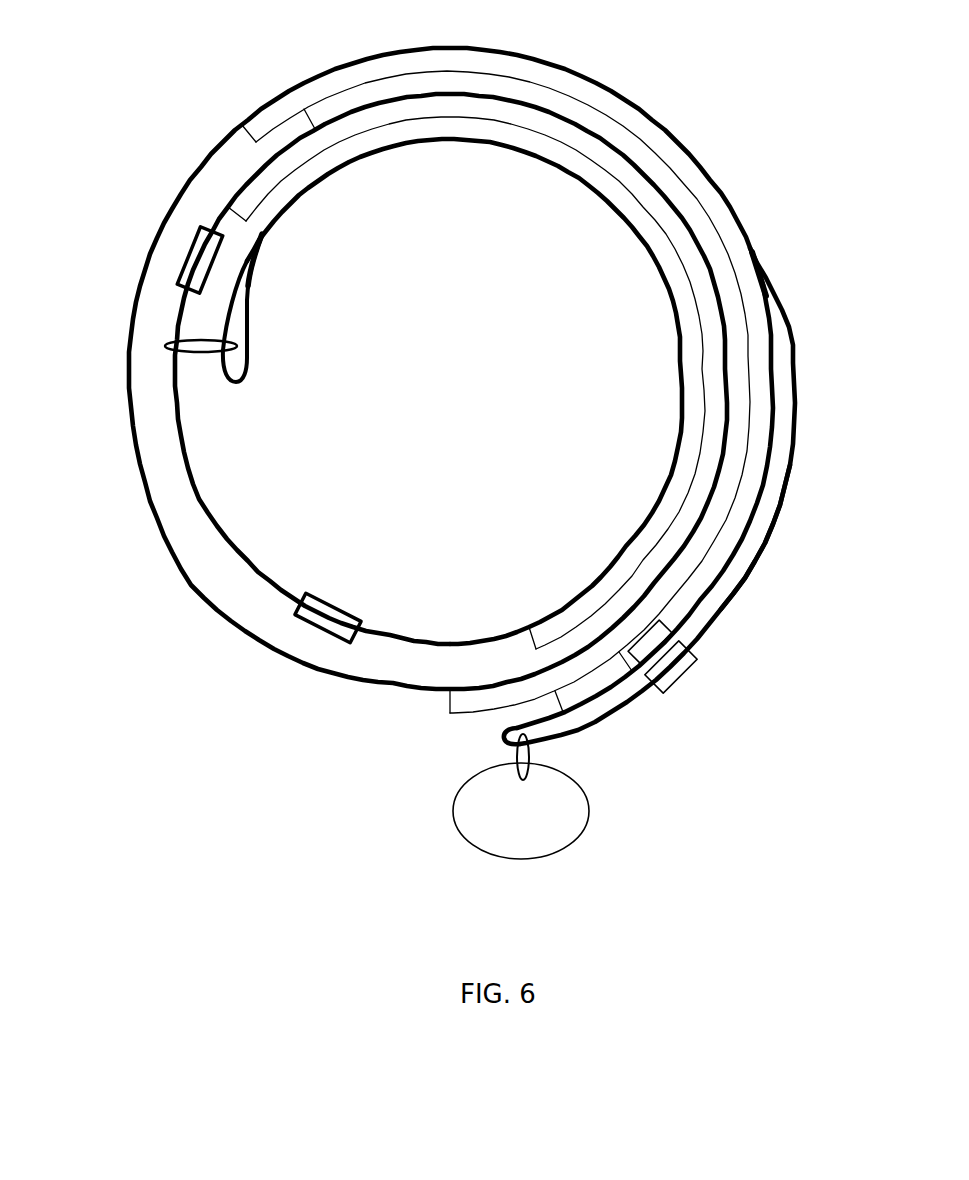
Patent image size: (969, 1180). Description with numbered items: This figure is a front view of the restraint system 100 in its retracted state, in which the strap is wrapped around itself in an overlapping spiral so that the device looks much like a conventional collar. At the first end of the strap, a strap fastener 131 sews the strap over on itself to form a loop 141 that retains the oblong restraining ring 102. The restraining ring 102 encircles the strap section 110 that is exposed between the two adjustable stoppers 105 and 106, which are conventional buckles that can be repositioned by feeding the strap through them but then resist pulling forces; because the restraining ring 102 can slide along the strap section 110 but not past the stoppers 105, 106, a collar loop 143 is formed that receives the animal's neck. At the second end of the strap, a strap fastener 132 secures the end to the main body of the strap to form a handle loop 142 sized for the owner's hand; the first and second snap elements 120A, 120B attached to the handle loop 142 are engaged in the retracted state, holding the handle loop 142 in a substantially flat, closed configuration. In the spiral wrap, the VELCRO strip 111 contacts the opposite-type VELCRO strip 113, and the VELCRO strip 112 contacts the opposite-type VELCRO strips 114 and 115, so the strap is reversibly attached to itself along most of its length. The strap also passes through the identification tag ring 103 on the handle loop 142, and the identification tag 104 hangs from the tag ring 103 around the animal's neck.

The restraint system 100 is at (114, 106).
The restraining ring 102 is at (198, 347).
The identification tag ring 103 is at (505, 757).
The identification tag 104 is at (553, 840).
The adjustable stopper 105 is at (330, 612).
The adjustable stopper 106 is at (204, 262).
The strap section 110 is at (258, 565).
The VELCRO strip 111 is at (277, 195).
The VELCRO strip 112 is at (690, 208).
The VELCRO strip 113 is at (310, 145).
The VELCRO strip 114 is at (757, 422).
The VELCRO strip 115 is at (585, 683).
The first snap element 120A is at (663, 688).
The second snap element 120B is at (657, 638).
The strap fastener 131 is at (262, 260).
The strap fastener 132 is at (762, 283).
The loop 141 is at (240, 362).
The handle loop 142 is at (745, 558).
The collar loop 143 is at (513, 170).